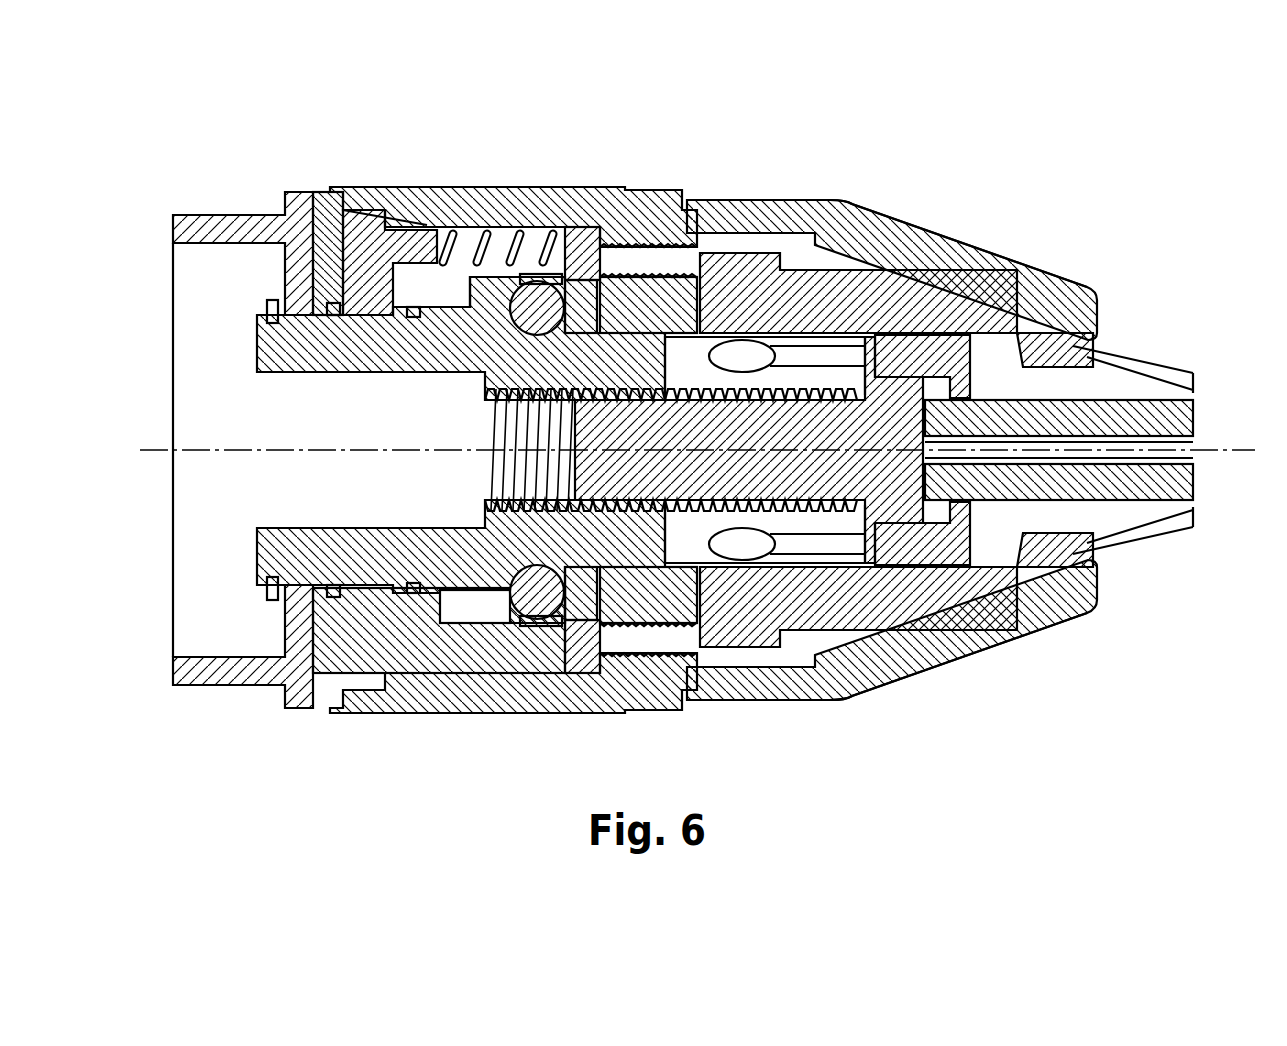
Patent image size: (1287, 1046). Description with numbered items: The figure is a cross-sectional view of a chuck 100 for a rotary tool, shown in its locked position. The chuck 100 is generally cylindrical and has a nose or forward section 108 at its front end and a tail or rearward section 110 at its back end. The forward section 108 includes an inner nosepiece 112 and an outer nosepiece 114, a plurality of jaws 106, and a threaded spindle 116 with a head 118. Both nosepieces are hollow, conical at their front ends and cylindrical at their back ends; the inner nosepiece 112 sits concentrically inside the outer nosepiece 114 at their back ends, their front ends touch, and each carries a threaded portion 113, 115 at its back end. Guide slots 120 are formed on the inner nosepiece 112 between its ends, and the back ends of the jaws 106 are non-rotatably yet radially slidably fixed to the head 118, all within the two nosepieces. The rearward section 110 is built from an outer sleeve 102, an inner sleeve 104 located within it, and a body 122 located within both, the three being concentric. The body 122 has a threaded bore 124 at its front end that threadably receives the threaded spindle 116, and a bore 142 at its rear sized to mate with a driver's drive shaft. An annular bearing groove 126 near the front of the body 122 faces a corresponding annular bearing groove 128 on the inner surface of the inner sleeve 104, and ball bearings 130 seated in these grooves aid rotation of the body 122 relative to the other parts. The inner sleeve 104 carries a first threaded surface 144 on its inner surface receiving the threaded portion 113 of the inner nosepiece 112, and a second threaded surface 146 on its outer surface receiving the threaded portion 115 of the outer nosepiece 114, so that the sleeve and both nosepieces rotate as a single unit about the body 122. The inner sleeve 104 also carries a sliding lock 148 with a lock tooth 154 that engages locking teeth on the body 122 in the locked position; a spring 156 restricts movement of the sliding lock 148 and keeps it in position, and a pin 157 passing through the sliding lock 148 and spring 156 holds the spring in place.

The chuck 100 is at (657, 102).
The outer sleeve 102 is at (598, 692).
The inner sleeve 104 is at (573, 655).
The jaws 106 is at (1162, 385).
The forward section 108 is at (964, 206).
The rearward section 110 is at (387, 108).
The inner nosepiece 112 is at (1068, 562).
The threaded portion 113 is at (683, 246).
The outer nosepiece 114 is at (1042, 285).
The threaded portion 115 is at (697, 292).
The threaded spindle 116 is at (842, 560).
The head 118 is at (945, 550).
The guide slots 120 is at (840, 345).
The body 122 is at (358, 572).
The threaded bore 124 is at (510, 407).
The annular bearing groove 126 is at (560, 632).
The annular bearing groove 128 is at (515, 620).
The ball bearings 130 is at (530, 600).
The bore 142 is at (308, 372).
The first threaded surface 144 is at (682, 627).
The second threaded surface 146 is at (645, 657).
The sliding lock 148 is at (418, 250).
The lock tooth 154 is at (357, 280).
The spring 156 is at (522, 230).
The pin 157 is at (540, 230).